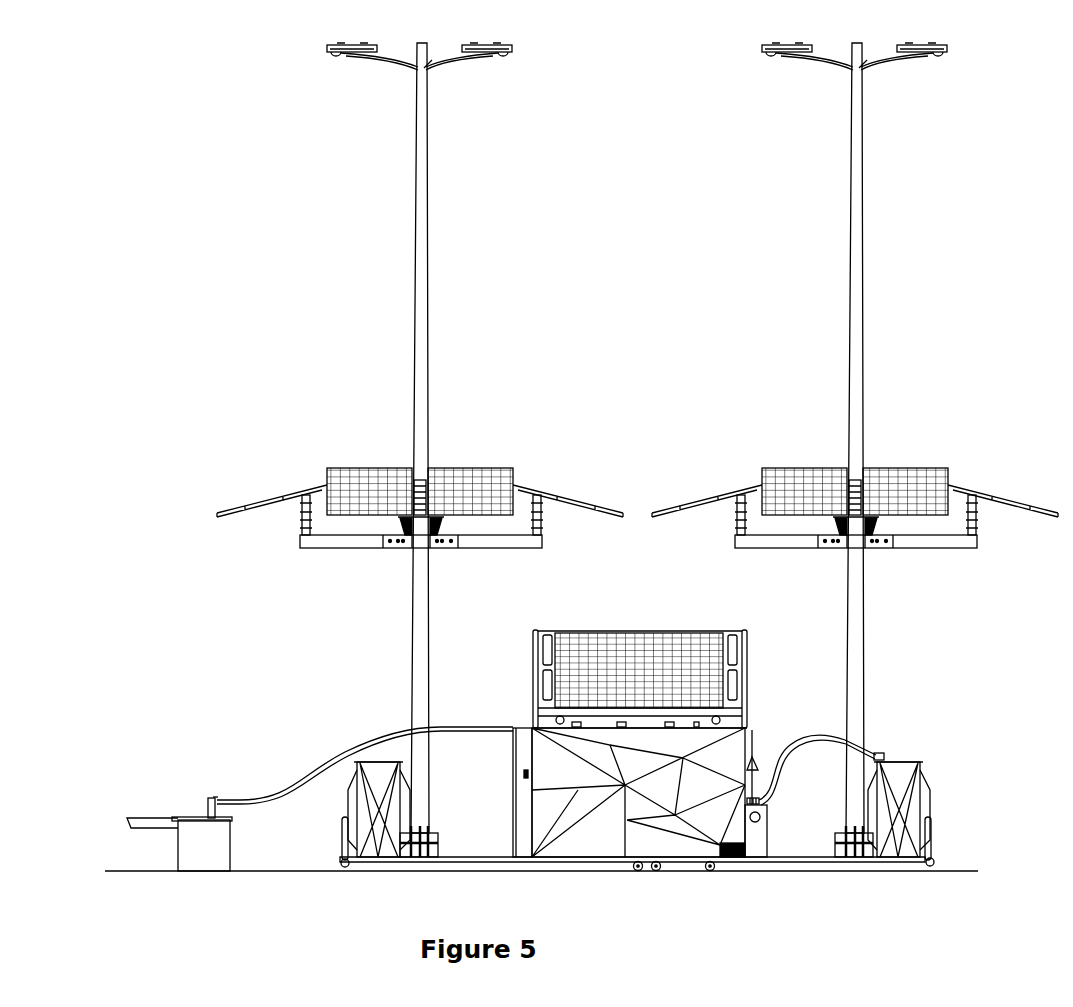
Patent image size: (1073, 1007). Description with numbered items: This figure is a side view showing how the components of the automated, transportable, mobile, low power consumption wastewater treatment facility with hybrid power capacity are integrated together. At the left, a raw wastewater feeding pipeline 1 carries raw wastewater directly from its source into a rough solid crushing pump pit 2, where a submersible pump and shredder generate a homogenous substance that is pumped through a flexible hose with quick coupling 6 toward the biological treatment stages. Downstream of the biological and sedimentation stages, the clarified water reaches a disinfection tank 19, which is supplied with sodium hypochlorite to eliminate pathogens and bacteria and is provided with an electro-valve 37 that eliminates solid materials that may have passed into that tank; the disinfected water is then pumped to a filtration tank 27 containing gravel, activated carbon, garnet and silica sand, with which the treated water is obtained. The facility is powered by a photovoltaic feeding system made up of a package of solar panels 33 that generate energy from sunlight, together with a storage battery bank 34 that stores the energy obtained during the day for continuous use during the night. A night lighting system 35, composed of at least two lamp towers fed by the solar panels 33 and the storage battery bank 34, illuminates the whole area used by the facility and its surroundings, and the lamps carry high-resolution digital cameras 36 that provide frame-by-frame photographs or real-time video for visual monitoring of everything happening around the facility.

The raw wastewater feeding pipeline 1 is at (143, 817).
The rough solid crushing pump pit 2 is at (200, 816).
The flexible hose with quick coupling 6 is at (255, 792).
The disinfection tank 19 is at (770, 803).
The filtration tank 27 is at (900, 762).
The package of solar panels 33 is at (345, 503).
The storage battery bank 34 is at (378, 762).
The night lighting system 35 is at (413, 173).
The high-resolution digital camera 36 is at (327, 57).
The electro-valve 37 is at (637, 871).